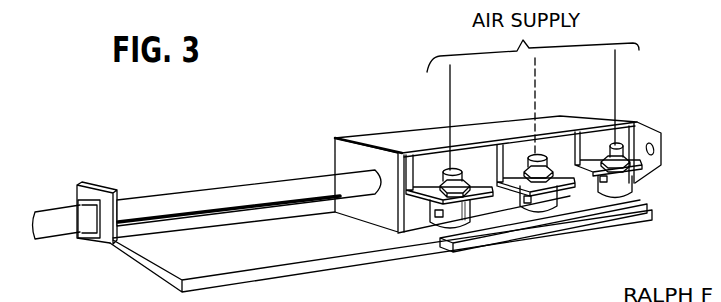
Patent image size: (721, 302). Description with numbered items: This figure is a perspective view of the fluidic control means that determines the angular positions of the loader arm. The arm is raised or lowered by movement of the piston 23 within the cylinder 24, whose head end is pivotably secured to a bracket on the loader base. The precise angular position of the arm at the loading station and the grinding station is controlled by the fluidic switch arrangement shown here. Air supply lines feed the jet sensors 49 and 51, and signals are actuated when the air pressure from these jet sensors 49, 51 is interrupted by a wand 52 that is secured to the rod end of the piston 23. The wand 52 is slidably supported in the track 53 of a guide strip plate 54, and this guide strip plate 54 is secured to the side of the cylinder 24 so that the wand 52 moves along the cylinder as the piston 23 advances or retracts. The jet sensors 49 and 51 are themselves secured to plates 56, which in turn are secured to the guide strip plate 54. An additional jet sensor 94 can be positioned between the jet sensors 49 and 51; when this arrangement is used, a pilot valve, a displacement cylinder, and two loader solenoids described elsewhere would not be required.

The piston 23 is at (208, 200).
The cylinder 24 is at (367, 138).
The jet sensor 49 is at (630, 182).
The jet sensor 51 is at (457, 220).
The wand 52 is at (304, 264).
The track 53 is at (513, 220).
The guide strip plate 54 is at (482, 138).
The plates 56 is at (422, 167).
The additional jet sensor 94 is at (557, 193).